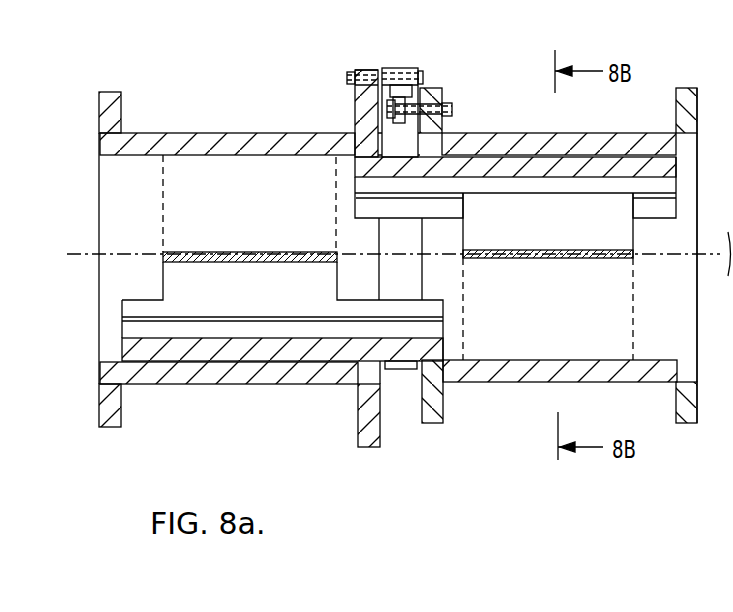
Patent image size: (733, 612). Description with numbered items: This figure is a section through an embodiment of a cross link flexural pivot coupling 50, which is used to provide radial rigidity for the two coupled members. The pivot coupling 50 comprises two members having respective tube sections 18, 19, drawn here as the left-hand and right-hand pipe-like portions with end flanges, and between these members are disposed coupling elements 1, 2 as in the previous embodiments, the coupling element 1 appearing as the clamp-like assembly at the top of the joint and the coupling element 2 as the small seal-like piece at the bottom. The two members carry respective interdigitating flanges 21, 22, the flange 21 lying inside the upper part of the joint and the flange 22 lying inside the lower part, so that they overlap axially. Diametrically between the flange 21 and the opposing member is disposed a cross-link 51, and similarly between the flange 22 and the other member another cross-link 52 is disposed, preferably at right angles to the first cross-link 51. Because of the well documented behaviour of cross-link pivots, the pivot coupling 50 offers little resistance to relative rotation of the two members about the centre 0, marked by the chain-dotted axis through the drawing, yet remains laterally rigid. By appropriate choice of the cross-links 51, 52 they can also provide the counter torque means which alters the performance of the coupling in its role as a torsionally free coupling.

The centre 0 is at (385, 256).
The coupling element 1 is at (414, 67).
The coupling element 2 is at (410, 370).
The tube section 18 is at (243, 132).
The tube section 19 is at (489, 131).
The flange 21 is at (634, 162).
The flange 22 is at (222, 350).
The cross link flexural pivot coupling 50 is at (701, 360).
The cross-link 51 is at (566, 240).
The cross-link 52 is at (220, 270).